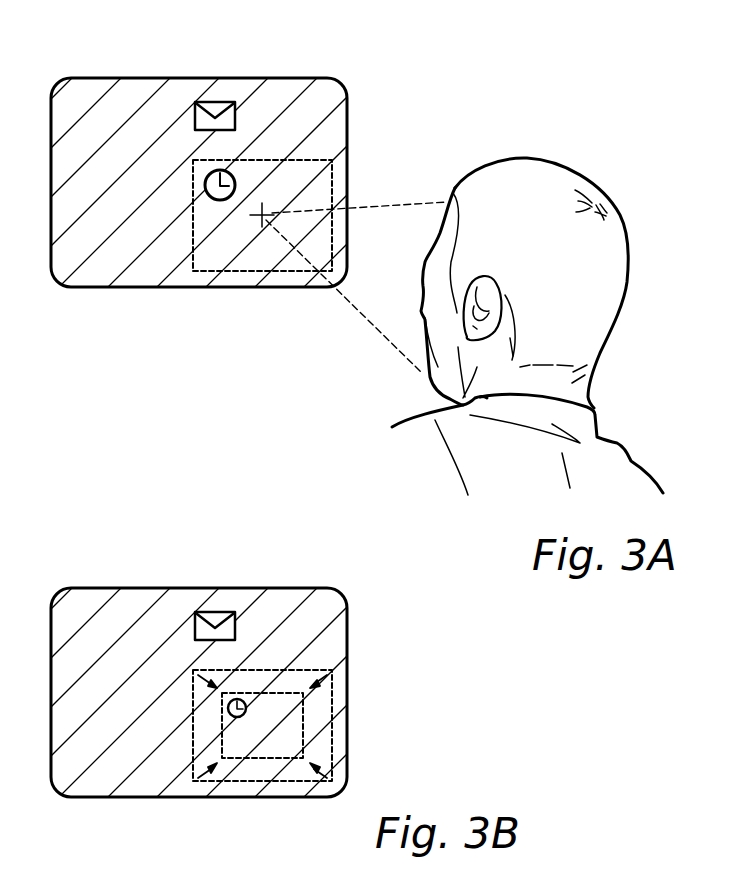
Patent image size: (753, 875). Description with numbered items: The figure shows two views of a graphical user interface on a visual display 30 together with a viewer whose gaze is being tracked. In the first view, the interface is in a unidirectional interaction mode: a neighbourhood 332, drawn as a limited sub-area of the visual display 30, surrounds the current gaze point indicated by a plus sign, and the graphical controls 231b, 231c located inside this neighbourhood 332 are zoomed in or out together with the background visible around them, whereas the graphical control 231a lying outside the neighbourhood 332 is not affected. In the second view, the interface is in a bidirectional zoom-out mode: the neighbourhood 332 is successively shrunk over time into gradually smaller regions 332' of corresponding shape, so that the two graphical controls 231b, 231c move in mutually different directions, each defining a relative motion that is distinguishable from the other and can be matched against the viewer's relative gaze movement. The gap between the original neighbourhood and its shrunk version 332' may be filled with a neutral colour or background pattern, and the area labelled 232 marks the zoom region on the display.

In FIG. 3A, the visual display 30 is at (347, 128).
In FIG. 3B, the visual display 30 is at (347, 638).
In FIG. 3A, the graphical control 231a is at (207, 100).
In FIG. 3B, the graphical control 231a is at (207, 610).
In FIG. 3A, the graphical control 231b is at (215, 200).
In FIG. 3B, the graphical control 231b is at (237, 718).
In FIG. 3A, the graphical control 231c is at (213, 266).
In FIG. 3B, the graphical control 231c is at (234, 760).
In FIG. 3A, the neighbourhood 332 is at (320, 206).
In FIG. 3B, the zoom region 232 is at (333, 702).
In FIG. 3B, the shrunk region 332' is at (332, 725).